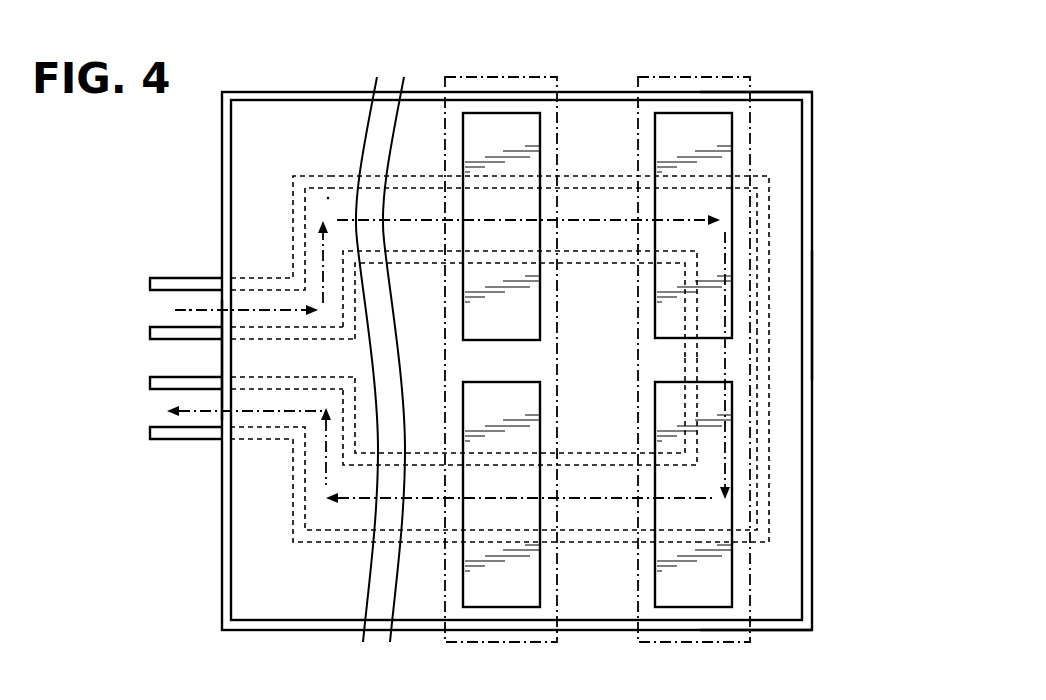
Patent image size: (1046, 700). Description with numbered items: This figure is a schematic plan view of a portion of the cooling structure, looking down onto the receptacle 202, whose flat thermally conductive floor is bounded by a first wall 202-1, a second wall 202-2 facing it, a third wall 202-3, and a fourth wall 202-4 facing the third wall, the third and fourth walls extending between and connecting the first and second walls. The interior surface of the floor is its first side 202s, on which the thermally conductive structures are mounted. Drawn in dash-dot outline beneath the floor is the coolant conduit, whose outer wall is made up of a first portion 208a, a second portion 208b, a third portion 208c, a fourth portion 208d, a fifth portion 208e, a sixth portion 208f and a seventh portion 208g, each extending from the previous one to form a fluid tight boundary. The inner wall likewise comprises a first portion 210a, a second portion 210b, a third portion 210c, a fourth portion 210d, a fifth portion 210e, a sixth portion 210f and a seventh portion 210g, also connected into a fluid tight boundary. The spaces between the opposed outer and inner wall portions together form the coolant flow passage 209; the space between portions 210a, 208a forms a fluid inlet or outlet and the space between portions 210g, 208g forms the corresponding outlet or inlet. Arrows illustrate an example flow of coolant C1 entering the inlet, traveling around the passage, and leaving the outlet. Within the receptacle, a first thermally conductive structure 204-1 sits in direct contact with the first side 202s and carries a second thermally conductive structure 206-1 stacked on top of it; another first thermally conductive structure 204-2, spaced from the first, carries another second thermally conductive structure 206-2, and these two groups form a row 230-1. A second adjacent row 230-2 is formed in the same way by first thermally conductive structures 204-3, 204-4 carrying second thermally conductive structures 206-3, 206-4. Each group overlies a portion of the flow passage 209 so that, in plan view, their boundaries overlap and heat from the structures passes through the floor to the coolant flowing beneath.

The receptacle 202 is at (561, 333).
The first wall 202-1 is at (222, 359).
The second wall 202-2 is at (812, 313).
The third wall 202-3 is at (767, 631).
The fourth wall 202-4 is at (774, 92).
The first side of the floor 202s is at (792, 590).
The first thermally conductive structure 204-1 is at (697, 608).
The other first thermally conductive structure 204-2 is at (698, 112).
The first thermally conductive structure 204-3 is at (505, 608).
The first thermally conductive structure 204-4 is at (507, 112).
The second thermally conductive structure 206-1 is at (692, 533).
The other second thermally conductive structure 206-2 is at (692, 187).
The second thermally conductive structure 206-3 is at (500, 533).
The second thermally conductive structure 206-4 is at (500, 188).
The first portion of the outer wall 208a is at (200, 278).
The second portion of the outer wall 208b is at (294, 193).
The third portion of the outer wall 208c is at (597, 175).
The fourth portion of the outer wall 208d is at (770, 332).
The fifth portion of the outer wall 208e is at (598, 544).
The sixth portion of the outer wall 208f is at (293, 492).
The seventh portion of the outer wall 208g is at (172, 440).
The coolant flow passage 209 is at (328, 198).
The first portion of the inner wall 210a is at (163, 331).
The second portion of the inner wall 210b is at (295, 240).
The third portion of the inner wall 210c is at (598, 266).
The fourth portion of the inner wall 210d is at (700, 362).
The fifth portion of the inner wall 210e is at (598, 450).
The sixth portion of the inner wall 210f is at (342, 442).
The seventh portion of the inner wall 210g is at (170, 386).
The row of thermally conductive structures 230-1 is at (634, 82).
The row of thermally conductive structures 230-2 is at (441, 81).
The flow of coolant C1 is at (190, 309).